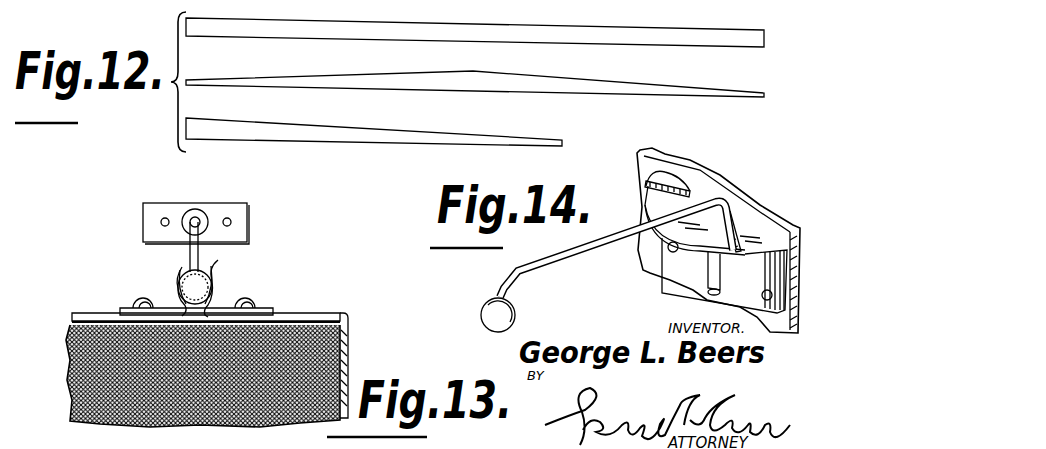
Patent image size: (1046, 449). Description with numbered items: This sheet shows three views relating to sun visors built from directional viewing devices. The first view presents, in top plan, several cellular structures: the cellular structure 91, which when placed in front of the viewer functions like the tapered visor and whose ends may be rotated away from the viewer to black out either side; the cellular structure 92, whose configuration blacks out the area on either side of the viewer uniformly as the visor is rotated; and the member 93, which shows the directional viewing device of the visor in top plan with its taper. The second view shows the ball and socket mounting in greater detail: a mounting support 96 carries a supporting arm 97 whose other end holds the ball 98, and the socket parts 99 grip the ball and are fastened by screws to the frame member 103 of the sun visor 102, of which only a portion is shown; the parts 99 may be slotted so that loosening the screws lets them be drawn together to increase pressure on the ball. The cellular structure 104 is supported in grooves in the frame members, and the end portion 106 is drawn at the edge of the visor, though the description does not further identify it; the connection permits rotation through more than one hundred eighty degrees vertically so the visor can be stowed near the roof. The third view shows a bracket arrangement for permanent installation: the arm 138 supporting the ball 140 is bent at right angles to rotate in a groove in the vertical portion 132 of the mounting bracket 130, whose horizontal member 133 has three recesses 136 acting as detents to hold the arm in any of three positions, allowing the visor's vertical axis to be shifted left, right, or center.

In FIG. 12, the cellular structure 91 is at (704, 54).
In FIG. 12, the cellular structure 92 is at (604, 104).
In FIG. 12, the directional viewing device member 93 is at (367, 121).
In FIG. 13, the mounting support 96 is at (143, 211).
In FIG. 13, the supporting arm 97 is at (190, 247).
In FIG. 13, the ball 98 is at (186, 268).
In FIG. 13, the socket parts 99 is at (176, 291).
In FIG. 13, the sun visor 102 is at (324, 308).
In FIG. 13, the frame member 103 is at (288, 318).
In FIG. 13, the cellular structure 104 is at (80, 345).
In FIG. 13, the end cap 106 is at (345, 358).
In FIG. 14, the mounting bracket 130 is at (690, 271).
In FIG. 14, the vertical portion 132 is at (688, 254).
In FIG. 14, the horizontal member 133 is at (748, 254).
In FIG. 14, the recesses 136 is at (732, 212).
In FIG. 14, the arm 138 is at (571, 263).
In FIG. 14, the ball 140 is at (482, 303).